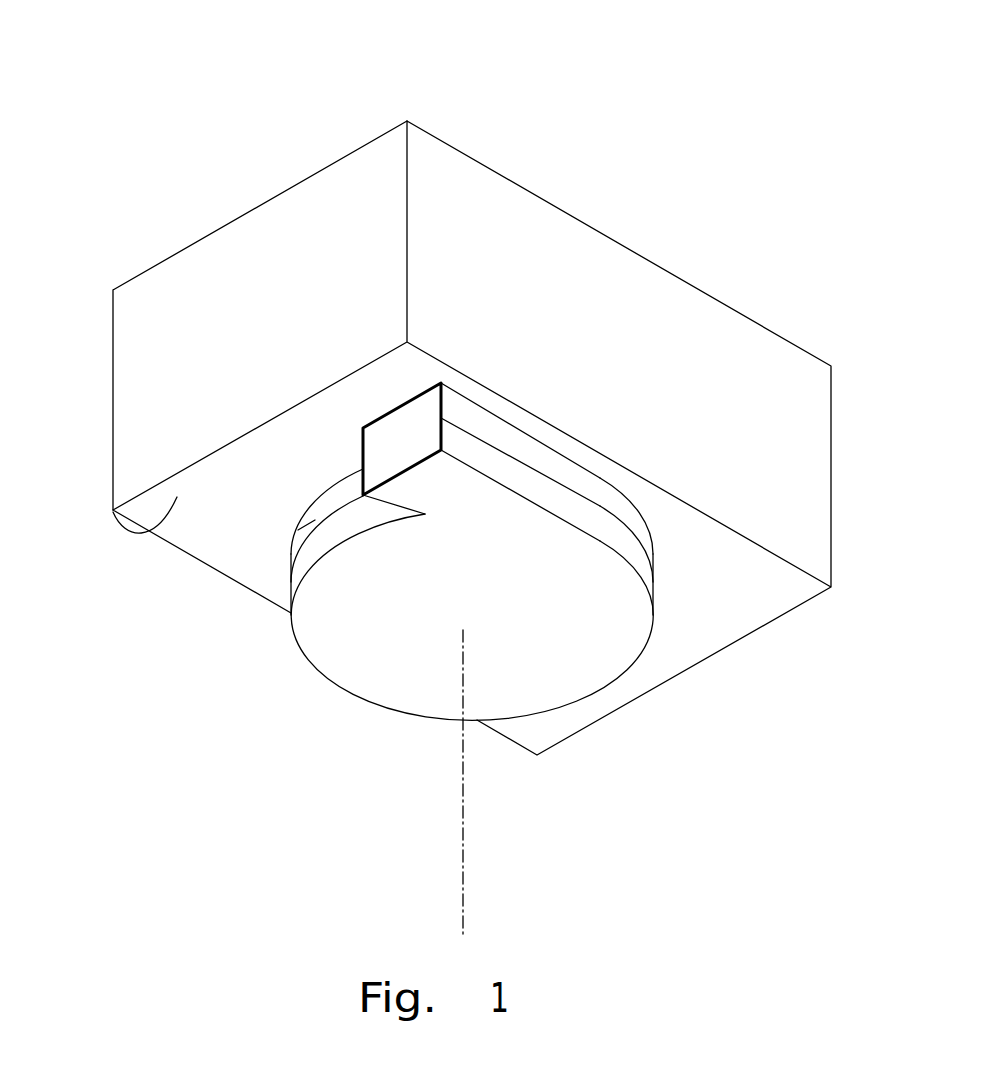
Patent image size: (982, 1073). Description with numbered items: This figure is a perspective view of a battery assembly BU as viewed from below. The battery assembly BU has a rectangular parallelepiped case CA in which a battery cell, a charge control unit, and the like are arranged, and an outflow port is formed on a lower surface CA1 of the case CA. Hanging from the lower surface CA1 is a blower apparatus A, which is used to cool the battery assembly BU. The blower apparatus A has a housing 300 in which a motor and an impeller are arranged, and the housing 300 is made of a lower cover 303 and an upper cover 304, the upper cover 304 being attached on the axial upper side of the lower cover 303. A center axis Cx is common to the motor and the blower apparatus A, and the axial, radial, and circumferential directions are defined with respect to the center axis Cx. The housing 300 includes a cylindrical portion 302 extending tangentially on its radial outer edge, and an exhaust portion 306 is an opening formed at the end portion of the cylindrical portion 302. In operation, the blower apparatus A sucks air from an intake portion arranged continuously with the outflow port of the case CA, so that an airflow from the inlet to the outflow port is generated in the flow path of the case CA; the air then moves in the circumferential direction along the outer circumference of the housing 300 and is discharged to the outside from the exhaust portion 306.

The battery assembly BU is at (495, 158).
The case CA is at (173, 277).
The lower surface CA1 is at (112, 510).
The housing 300 is at (412, 688).
The cylindrical portion 302 is at (447, 467).
The lower cover 303 is at (523, 700).
The upper cover 304 is at (293, 543).
The exhaust portion 306 is at (405, 452).
The center axis Cx is at (463, 908).
The blower apparatus A is at (352, 807).